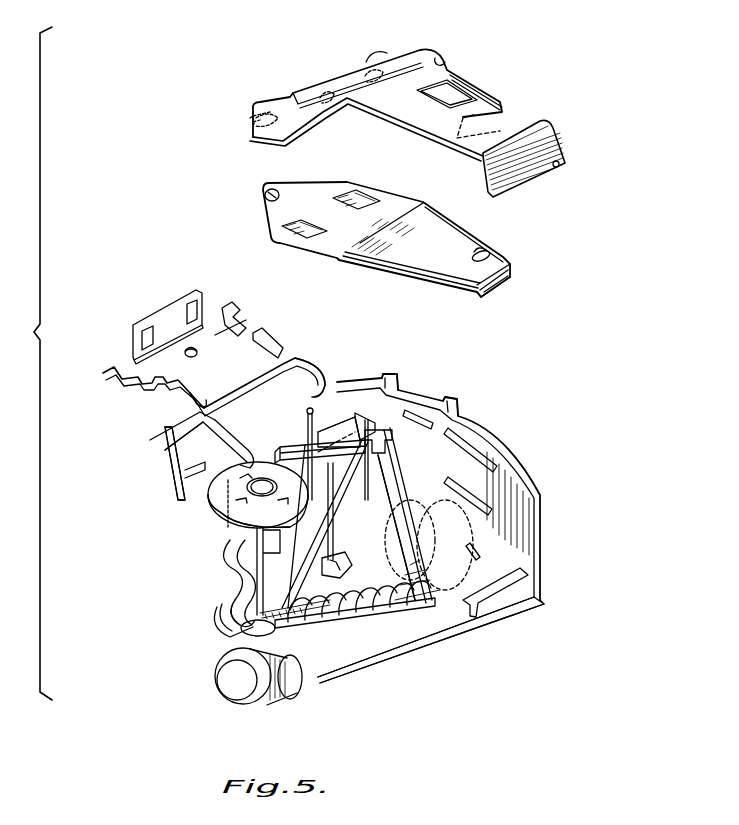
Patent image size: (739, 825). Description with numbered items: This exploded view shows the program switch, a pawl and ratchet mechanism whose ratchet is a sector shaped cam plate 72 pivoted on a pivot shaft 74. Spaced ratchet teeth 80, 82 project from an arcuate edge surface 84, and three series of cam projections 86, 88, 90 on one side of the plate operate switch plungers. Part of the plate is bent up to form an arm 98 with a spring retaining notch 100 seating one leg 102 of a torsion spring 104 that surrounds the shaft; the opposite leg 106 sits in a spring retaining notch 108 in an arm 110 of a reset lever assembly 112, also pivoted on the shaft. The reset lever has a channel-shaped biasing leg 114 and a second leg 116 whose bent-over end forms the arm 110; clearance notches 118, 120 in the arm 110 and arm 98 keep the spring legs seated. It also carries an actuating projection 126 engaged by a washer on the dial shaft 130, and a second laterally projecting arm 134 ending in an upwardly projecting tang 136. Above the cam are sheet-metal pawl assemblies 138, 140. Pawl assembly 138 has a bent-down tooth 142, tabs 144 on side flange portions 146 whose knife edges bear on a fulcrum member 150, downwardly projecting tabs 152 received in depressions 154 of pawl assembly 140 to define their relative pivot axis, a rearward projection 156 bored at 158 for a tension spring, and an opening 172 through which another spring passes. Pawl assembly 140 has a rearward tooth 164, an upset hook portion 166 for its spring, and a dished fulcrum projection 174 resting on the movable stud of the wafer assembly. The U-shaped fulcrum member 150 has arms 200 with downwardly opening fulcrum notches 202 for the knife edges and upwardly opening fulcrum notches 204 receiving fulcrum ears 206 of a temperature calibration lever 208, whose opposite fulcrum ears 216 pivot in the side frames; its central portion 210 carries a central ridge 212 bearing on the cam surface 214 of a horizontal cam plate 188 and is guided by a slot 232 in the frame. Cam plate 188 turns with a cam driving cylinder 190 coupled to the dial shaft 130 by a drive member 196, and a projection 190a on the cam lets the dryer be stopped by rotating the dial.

The cam plate 72 is at (525, 535).
The pivot shaft 74 is at (226, 680).
The ratchet tooth 80 is at (398, 378).
The ratchet tooth 82 is at (460, 405).
The edge surface 84 is at (510, 460).
The cam projections 86 is at (465, 448).
The cam projections 88 is at (468, 495).
The cam projections 90 is at (480, 545).
The arm 98 is at (340, 420).
The spring retaining notch 100 is at (370, 430).
The leg 102 is at (375, 480).
The torsion spring 104 is at (340, 618).
The leg 106 is at (308, 440).
The spring retaining notch 108 is at (333, 436).
The arm 110 is at (328, 500).
The reset lever assembly 112 is at (410, 683).
The biasing leg 114 is at (460, 622).
The second leg 116 is at (395, 527).
The clearance notch 118 is at (385, 450).
The clearance notch 120 is at (302, 445).
The actuating projection 126 is at (292, 618).
The dial shaft 130 is at (217, 610).
The second laterally projecting arm 134 is at (332, 555).
The tang 136 is at (395, 508).
The pawl assembly 138 is at (518, 90).
The pawl assembly 140 is at (500, 225).
The tooth 142 is at (500, 126).
The tabs 144 is at (251, 118).
The side flange portions 146 is at (385, 53).
The fulcrum member 150 is at (322, 350).
The downwardly projecting tabs 152 is at (367, 74).
The depressions 154 is at (375, 190).
The projection 156 is at (560, 147).
The bore 158 is at (559, 168).
The tooth 164 is at (500, 284).
The upset hook portion 166 is at (488, 250).
The opening 172 is at (458, 92).
The fulcrum projection 174 is at (265, 195).
The cam plate 188 is at (210, 497).
The cam driving cylinder 190 is at (232, 545).
The projection 190a is at (232, 588).
The drive member 196 is at (265, 550).
The arms 200 is at (165, 452).
The fulcrum notches 202 is at (245, 452).
The fulcrum notches 204 is at (190, 405).
The fulcrum ears 206 is at (228, 368).
The temperature calibration lever 208 is at (231, 346).
The central portion 210 is at (177, 482).
The central ridge 212 is at (205, 470).
The cam surface 214 is at (210, 510).
The fulcrum ears 216 is at (224, 306).
The slot 232 is at (186, 356).